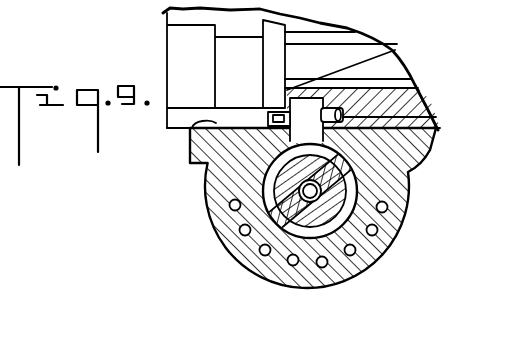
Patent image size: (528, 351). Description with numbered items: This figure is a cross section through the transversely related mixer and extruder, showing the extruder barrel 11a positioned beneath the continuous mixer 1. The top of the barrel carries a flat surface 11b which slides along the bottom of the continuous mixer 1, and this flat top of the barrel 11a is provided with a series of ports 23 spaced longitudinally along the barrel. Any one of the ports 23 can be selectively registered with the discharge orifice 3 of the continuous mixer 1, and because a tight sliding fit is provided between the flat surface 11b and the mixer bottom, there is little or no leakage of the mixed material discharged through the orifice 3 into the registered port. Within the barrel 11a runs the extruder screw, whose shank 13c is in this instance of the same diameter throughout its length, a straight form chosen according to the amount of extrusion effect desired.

The continuous mixer 1 is at (177, 13).
The discharge orifice 3 is at (277, 110).
The ports 23 is at (313, 208).
The barrel 11a is at (383, 183).
The flat surface 11b is at (188, 132).
The shank 13c is at (375, 231).